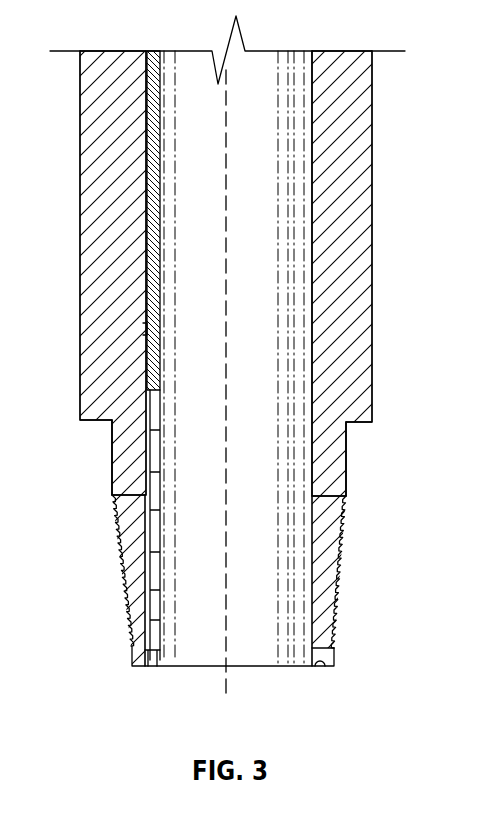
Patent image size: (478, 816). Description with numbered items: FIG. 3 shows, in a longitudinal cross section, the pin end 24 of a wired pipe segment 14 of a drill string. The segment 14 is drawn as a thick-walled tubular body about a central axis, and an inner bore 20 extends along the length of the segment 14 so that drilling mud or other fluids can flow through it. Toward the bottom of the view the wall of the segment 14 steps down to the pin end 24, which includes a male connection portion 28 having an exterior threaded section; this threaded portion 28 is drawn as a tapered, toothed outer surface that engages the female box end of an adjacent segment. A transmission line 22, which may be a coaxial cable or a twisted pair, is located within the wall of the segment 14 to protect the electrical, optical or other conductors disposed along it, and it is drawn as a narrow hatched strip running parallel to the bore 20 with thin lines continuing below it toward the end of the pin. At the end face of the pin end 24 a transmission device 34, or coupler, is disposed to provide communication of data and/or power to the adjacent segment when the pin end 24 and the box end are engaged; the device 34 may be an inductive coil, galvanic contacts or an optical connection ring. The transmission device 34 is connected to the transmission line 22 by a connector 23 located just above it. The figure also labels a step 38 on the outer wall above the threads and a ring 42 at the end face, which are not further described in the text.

The wired pipe segment 14 is at (355, 165).
The inner bore 20 is at (171, 155).
The transmission line 22 is at (160, 360).
The connector 23 is at (153, 608).
The pin end 24 is at (126, 465).
The male connection portion 28 is at (343, 543).
The transmission device 34 is at (152, 667).
The step 38 is at (347, 440).
The seal ring 42 is at (334, 655).